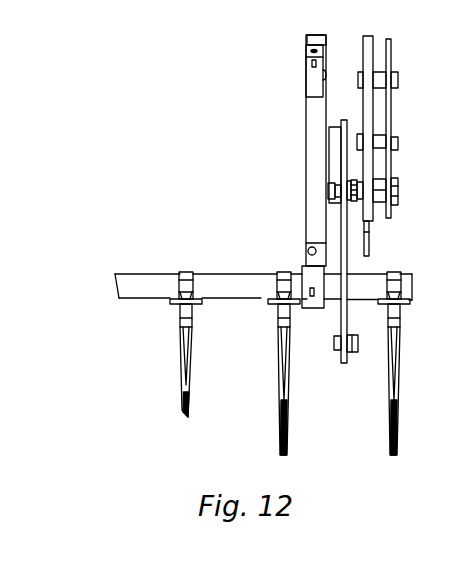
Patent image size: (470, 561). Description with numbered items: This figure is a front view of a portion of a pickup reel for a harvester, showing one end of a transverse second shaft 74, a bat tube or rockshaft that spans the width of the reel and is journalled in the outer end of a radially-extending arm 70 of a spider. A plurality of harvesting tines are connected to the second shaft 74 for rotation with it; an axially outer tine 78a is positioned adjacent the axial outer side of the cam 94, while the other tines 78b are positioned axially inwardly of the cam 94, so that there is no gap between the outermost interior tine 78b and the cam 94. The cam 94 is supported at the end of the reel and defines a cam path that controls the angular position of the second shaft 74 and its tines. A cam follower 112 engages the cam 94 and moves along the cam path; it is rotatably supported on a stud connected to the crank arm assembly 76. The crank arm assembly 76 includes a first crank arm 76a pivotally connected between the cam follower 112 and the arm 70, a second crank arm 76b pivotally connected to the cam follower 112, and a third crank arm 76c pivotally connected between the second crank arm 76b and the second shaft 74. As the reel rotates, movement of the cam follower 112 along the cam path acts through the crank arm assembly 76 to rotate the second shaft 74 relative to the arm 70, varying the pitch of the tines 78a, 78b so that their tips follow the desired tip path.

The radially-extending arm 70 is at (306, 102).
The second shaft 74 is at (243, 273).
The crank arm assembly 76 is at (329, 263).
The first crank arm 76a is at (329, 156).
The second crank arm 76b is at (372, 253).
The third crank arm 76c is at (340, 323).
The axially outer tine 78a is at (399, 413).
The tine 78b is at (277, 417).
The cam 94 is at (393, 98).
The cam follower 112 is at (376, 171).